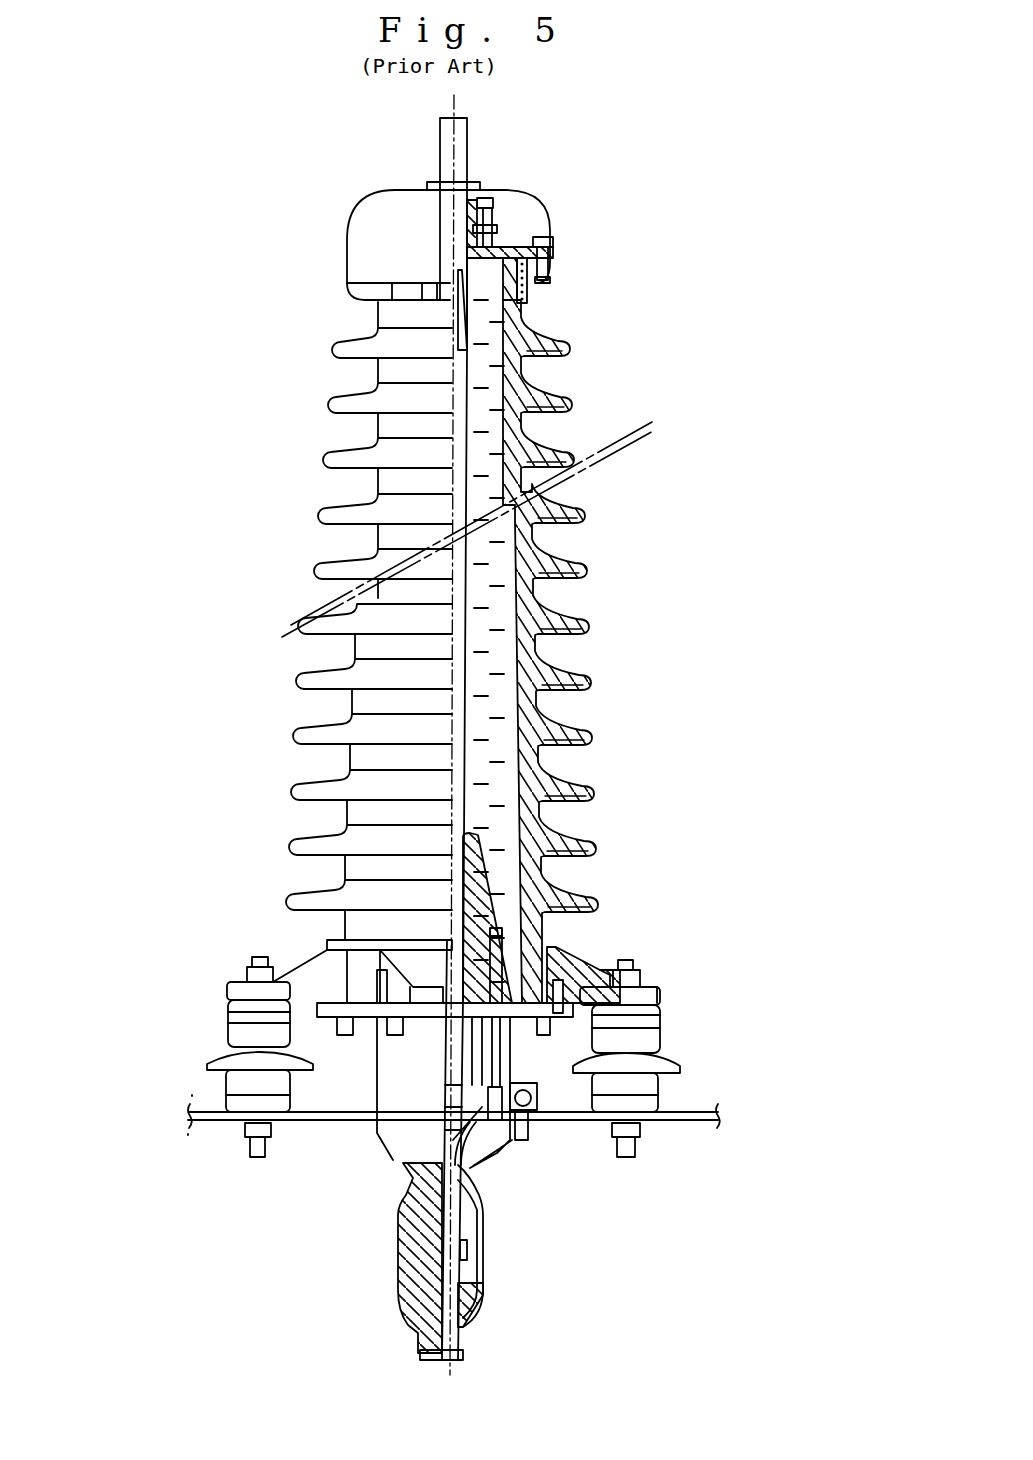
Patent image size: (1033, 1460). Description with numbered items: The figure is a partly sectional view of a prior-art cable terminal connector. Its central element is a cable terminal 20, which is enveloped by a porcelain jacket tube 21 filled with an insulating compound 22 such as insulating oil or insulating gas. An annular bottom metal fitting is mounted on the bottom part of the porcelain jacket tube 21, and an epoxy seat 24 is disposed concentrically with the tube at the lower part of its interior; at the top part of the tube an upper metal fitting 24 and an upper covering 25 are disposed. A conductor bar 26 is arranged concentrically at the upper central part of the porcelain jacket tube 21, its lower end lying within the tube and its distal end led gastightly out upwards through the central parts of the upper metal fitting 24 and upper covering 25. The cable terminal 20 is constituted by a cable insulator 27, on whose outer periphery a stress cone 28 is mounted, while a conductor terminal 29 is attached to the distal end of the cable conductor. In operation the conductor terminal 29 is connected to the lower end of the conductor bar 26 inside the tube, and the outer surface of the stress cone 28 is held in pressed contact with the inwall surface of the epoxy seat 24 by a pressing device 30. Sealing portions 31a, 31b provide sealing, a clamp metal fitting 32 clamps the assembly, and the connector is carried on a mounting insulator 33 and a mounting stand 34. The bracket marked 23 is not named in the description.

The cable terminal 20 is at (383, 1160).
The porcelain jacket tube 21 is at (590, 617).
The insulating compound 22 is at (480, 395).
The mounting bracket 23 is at (598, 980).
The epoxy seat 24 is at (518, 249).
The upper covering 25 is at (533, 190).
The conductor bar 26 is at (467, 140).
The cable insulator 27 is at (453, 803).
The stress cone 28 is at (483, 925).
The conductor terminal 29 is at (455, 300).
The pressing device 30 is at (522, 1052).
The sealing portion 31a is at (467, 333).
The sealing portion 31b is at (479, 1302).
The clamp metal fitting 32 is at (497, 225).
The mounting insulator 33 is at (647, 1040).
The mounting stand 34 is at (667, 1121).